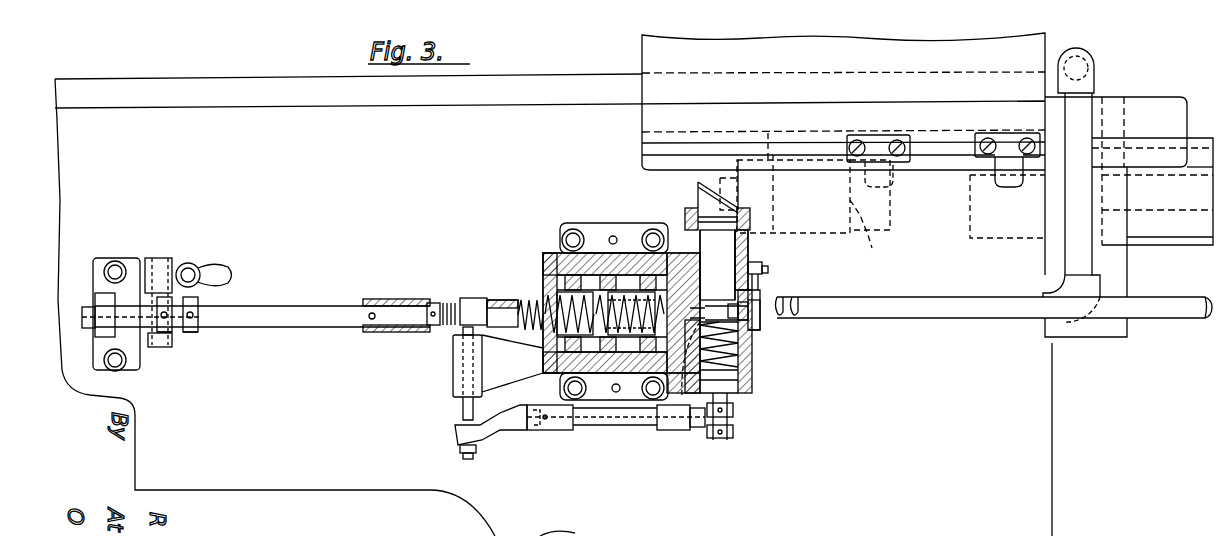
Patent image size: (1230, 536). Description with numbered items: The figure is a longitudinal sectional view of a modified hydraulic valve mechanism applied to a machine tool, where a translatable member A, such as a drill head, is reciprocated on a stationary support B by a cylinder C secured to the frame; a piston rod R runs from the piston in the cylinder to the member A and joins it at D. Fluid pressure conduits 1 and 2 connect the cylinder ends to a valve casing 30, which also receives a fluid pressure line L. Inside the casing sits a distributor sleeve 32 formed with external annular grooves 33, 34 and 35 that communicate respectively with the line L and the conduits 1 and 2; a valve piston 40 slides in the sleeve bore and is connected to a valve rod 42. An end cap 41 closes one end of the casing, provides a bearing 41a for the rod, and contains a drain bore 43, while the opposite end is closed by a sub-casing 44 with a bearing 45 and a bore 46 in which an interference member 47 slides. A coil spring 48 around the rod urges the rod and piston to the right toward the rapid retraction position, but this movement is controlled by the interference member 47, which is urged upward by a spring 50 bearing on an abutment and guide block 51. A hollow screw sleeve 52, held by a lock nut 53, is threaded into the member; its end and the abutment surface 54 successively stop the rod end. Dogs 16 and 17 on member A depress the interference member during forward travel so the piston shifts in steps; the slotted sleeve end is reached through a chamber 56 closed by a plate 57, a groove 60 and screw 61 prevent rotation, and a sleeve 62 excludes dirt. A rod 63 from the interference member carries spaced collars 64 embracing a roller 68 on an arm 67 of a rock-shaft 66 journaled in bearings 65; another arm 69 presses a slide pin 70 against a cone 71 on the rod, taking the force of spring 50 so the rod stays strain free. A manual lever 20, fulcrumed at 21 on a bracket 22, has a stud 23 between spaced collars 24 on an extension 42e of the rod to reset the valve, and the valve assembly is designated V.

The fluid pressure conduit 1 is at (1168, 310).
The fluid pressure conduit 2 is at (1080, 258).
The dog 16 is at (878, 145).
The dog 17 is at (1008, 145).
The lever 20 is at (232, 275).
The fulcrum 21 is at (163, 260).
The bracket 22 is at (127, 258).
The stud 23 is at (200, 302).
The spaced collars 24 is at (190, 332).
The valve casing 30 is at (556, 258).
The sleeve 32 is at (553, 278).
The annular groove 33 is at (615, 365).
The annular groove 34 is at (556, 374).
The annular groove 35 is at (643, 378).
The valve piston 40 is at (556, 336).
The end cap 41 is at (545, 360).
The bearing 41a is at (472, 305).
The valve rod 42 is at (500, 300).
The extension 42e is at (256, 315).
The bore 43 is at (515, 340).
The sub-casing 44 is at (748, 362).
The bearing 45 is at (700, 290).
The bore 46 is at (740, 386).
The interference member 47 is at (700, 262).
The coil spring 48 is at (548, 300).
The spring 50 is at (730, 372).
The abutment and guide block 51 is at (735, 398).
The sleeve 52 is at (752, 318).
The lock nut 53 is at (745, 320).
The abutment surface 54 is at (683, 358).
The chamber 56 is at (760, 328).
The plate 57 is at (768, 292).
The groove 60 is at (750, 254).
The screw 61 is at (762, 268).
The sleeve 62 is at (752, 226).
The rod 63 is at (733, 434).
The spaced collars 64 is at (735, 412).
The bearings 65 is at (566, 432).
The rock-shaft 66 is at (590, 430).
The arm 67 is at (680, 432).
The roller 68 is at (704, 428).
The arm 69 is at (493, 433).
The slide pin 70 is at (455, 380).
The cone 71 is at (456, 331).
The translatable member A is at (843, 154).
The stationary support B is at (591, 305).
The cylinder C is at (1178, 245).
The connection D is at (805, 199).
The fluid pressure line L is at (619, 265).
The piston rod R is at (984, 218).
The valve V is at (558, 226).